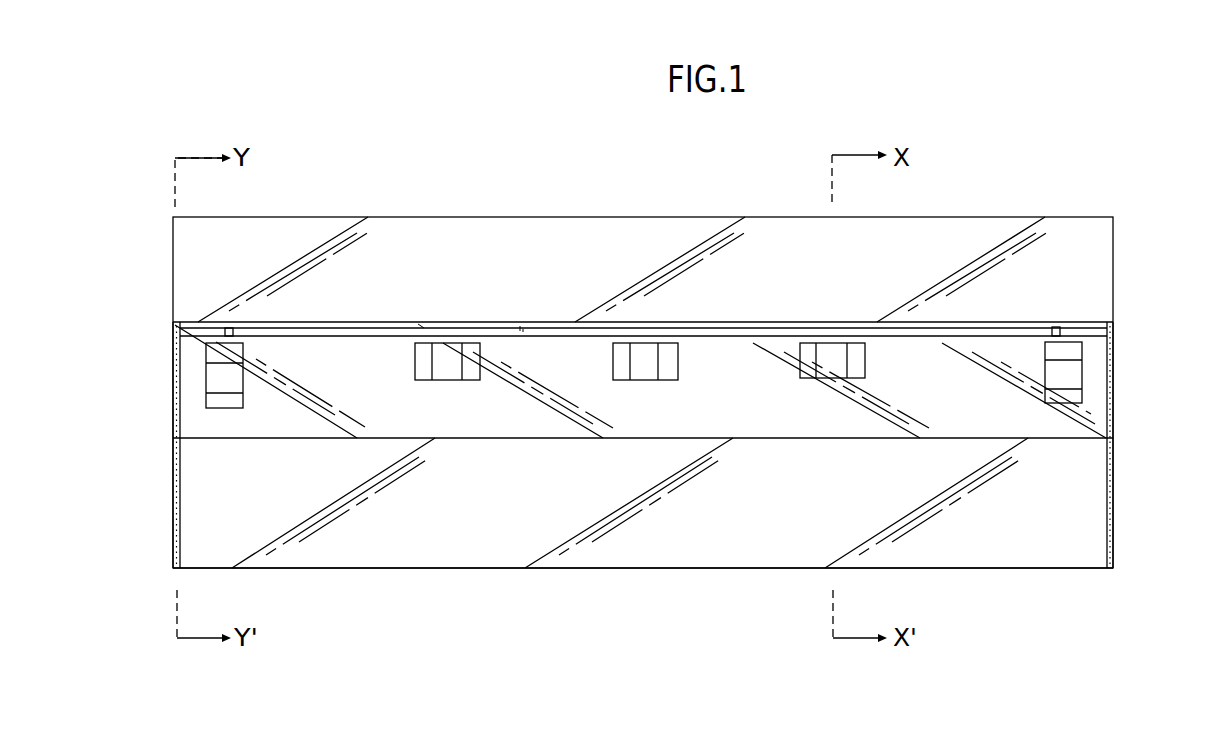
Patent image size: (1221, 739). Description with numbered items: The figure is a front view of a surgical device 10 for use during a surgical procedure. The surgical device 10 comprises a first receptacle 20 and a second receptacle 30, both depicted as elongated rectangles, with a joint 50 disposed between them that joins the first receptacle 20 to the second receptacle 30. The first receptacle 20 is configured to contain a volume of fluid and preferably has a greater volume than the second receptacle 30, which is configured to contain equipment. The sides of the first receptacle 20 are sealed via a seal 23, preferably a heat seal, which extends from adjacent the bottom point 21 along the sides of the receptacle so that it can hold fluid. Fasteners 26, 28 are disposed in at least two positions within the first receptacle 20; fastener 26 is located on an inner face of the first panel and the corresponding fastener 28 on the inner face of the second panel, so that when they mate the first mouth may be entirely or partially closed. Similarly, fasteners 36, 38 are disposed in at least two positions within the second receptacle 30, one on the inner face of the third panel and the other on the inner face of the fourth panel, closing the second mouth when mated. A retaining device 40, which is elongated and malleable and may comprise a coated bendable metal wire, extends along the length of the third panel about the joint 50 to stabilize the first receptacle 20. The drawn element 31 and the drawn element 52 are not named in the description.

The surgical device 10 is at (290, 152).
The first receptacle 20 is at (495, 550).
The bottom point 21 is at (613, 568).
The seal 23 is at (173, 492).
The fastener 26 is at (473, 350).
The fastener 28 is at (445, 350).
The second receptacle 30 is at (198, 422).
The interface line 31 is at (683, 438).
The fastener 36 is at (1073, 350).
The fastener 38 is at (1073, 380).
The retaining device 40 is at (1022, 330).
The joint 50 is at (662, 322).
The fastening element 52 is at (180, 333).